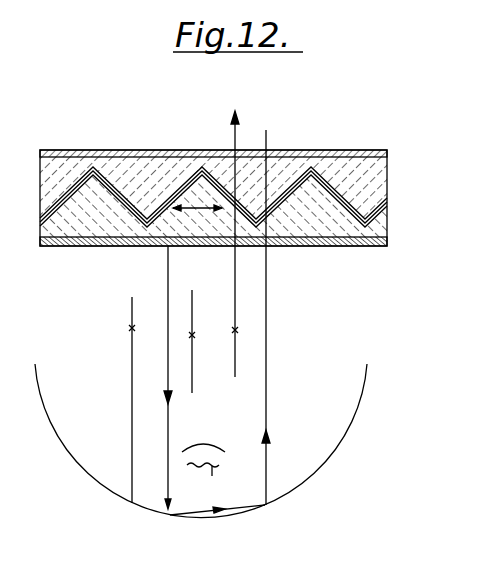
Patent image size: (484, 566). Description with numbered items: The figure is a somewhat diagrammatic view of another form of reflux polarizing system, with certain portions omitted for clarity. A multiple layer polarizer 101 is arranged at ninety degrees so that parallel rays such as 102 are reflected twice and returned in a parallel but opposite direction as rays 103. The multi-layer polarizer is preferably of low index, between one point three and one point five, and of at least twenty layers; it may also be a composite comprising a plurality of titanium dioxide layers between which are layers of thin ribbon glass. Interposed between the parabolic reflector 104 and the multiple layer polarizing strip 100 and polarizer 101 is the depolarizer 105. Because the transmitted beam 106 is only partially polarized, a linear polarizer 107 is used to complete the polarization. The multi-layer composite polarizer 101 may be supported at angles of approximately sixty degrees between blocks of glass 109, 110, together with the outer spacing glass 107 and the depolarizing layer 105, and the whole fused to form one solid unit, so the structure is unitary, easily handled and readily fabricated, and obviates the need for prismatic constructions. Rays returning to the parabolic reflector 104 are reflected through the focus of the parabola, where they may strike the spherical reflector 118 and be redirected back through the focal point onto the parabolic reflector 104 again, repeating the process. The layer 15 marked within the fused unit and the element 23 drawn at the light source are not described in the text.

The multiple layer polarizer 101 is at (357, 156).
The linear polarizer 107 is at (277, 152).
The depolarizer 105 is at (73, 244).
The block of glass 110 is at (150, 172).
The multiple layer polarizing strip 100 is at (278, 213).
The corrugated interface layer 15 is at (249, 203).
The block of glass 109 is at (108, 225).
The transmitted beam 106 is at (230, 131).
The parallel rays 102 is at (235, 313).
The returned rays 103 is at (168, 376).
The parabolic reflector 104 is at (66, 442).
The spherical reflector 118 is at (207, 442).
The lamp filament 23 is at (206, 481).